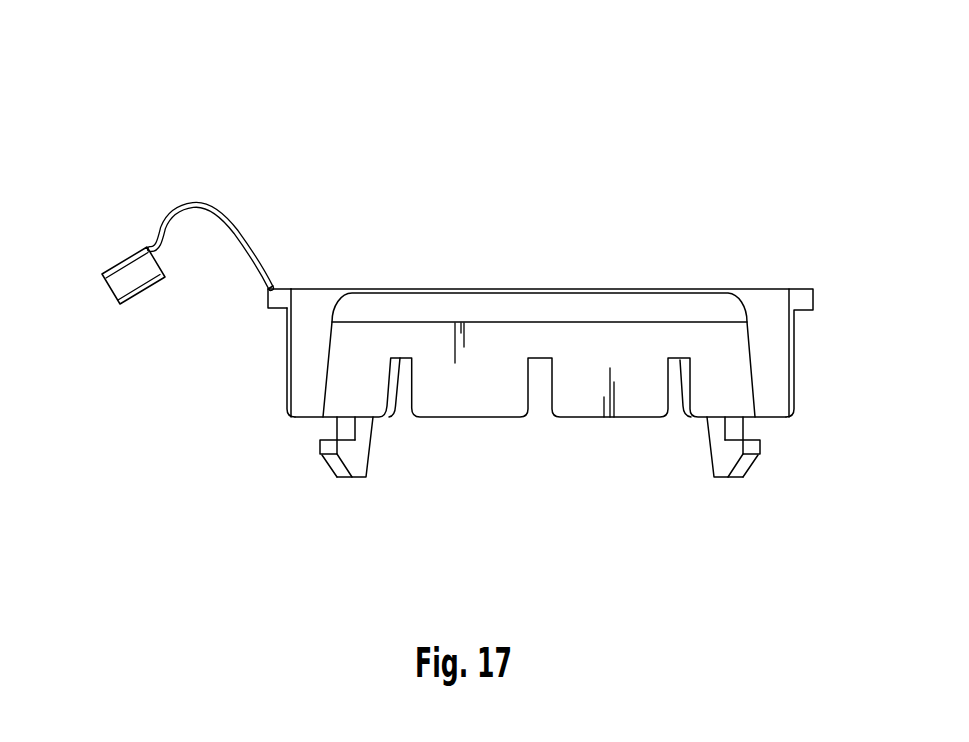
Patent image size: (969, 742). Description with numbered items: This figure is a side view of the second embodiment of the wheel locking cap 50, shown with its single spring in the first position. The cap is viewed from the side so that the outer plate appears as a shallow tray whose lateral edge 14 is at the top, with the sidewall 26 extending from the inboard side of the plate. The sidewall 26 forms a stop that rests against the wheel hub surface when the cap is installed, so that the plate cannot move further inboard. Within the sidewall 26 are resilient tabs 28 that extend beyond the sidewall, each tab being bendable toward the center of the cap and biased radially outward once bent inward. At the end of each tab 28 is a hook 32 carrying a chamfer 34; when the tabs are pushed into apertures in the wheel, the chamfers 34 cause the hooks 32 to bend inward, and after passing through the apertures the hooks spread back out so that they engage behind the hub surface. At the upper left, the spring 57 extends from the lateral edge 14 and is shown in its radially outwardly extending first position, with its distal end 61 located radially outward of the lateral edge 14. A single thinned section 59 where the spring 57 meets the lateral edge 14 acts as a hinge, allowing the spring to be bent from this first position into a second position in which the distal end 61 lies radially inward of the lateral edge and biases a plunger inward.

The wheel locking cap 50 is at (494, 200).
The spring 57 is at (228, 228).
The thinned section 59 is at (272, 288).
The distal end 61 is at (107, 286).
The lateral edge 14 is at (268, 298).
The sidewall 26 is at (502, 400).
The tab 28 is at (366, 440).
The hook 32 is at (320, 445).
The chamfer 34 is at (325, 467).